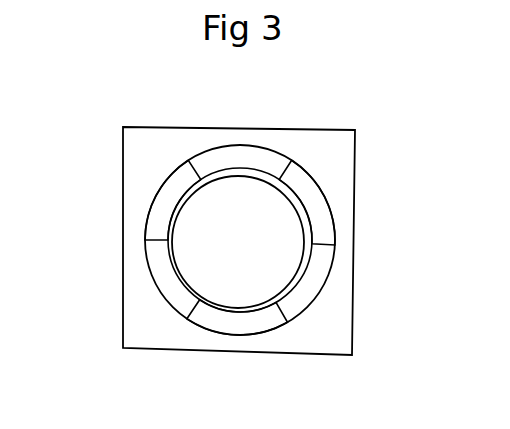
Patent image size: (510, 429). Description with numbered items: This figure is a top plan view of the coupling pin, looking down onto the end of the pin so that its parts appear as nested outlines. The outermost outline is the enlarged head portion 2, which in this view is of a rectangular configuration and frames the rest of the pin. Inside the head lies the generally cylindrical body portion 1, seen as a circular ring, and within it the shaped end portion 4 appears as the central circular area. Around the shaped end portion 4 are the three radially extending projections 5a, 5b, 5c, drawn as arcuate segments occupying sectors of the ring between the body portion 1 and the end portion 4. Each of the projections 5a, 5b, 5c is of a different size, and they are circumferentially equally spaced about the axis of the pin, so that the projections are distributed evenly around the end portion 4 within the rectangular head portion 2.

The cylindrical body portion 1 is at (335, 276).
The head portion 2 is at (333, 340).
The shaped end portion 4 is at (238, 242).
The projection 5a is at (227, 321).
The projection 5b is at (320, 213).
The projection 5c is at (171, 192).